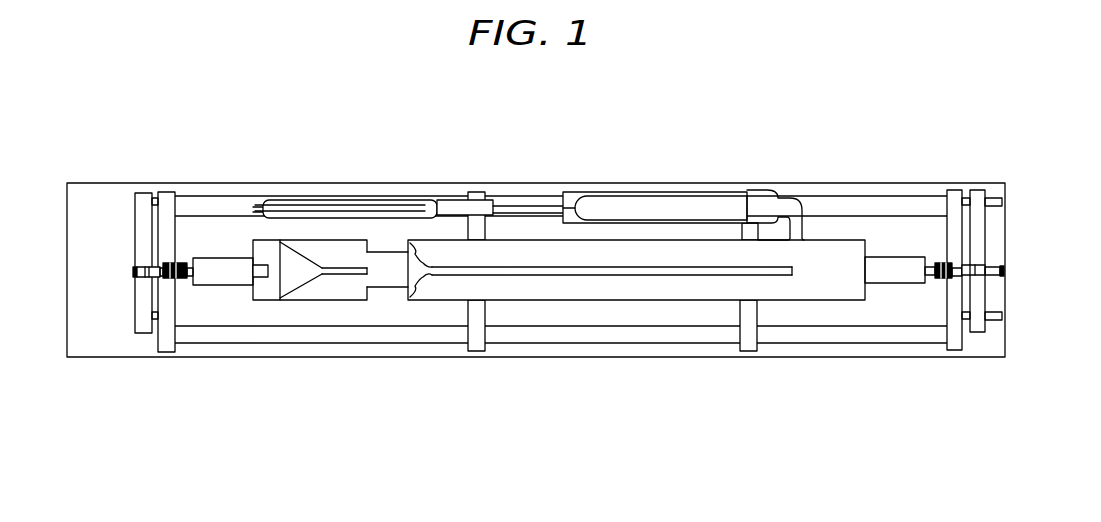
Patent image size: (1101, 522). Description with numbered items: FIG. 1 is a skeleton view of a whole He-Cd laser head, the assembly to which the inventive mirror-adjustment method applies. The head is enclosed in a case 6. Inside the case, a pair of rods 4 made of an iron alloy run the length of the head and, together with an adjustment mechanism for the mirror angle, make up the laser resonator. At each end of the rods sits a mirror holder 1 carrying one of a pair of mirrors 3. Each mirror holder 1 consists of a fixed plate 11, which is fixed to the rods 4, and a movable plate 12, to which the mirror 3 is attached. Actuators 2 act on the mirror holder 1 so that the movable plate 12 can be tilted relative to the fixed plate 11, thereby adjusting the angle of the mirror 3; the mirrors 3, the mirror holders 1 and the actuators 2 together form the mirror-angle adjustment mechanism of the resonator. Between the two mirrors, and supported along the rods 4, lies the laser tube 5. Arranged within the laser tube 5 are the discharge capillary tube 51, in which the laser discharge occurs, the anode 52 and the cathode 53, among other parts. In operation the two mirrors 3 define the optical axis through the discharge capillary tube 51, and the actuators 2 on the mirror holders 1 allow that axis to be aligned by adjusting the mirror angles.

The mirror holder 1 is at (973, 206).
The fixed plate 11 is at (955, 190).
The movable plate 12 is at (986, 224).
The actuators 2 is at (1003, 202).
The mirrors 3 is at (148, 277).
The rods 4 is at (813, 343).
The laser tube 5 is at (503, 302).
The discharge capillary tube 51 is at (557, 277).
The anode 52 is at (260, 278).
The cathode 53 is at (637, 192).
The case 6 is at (667, 357).